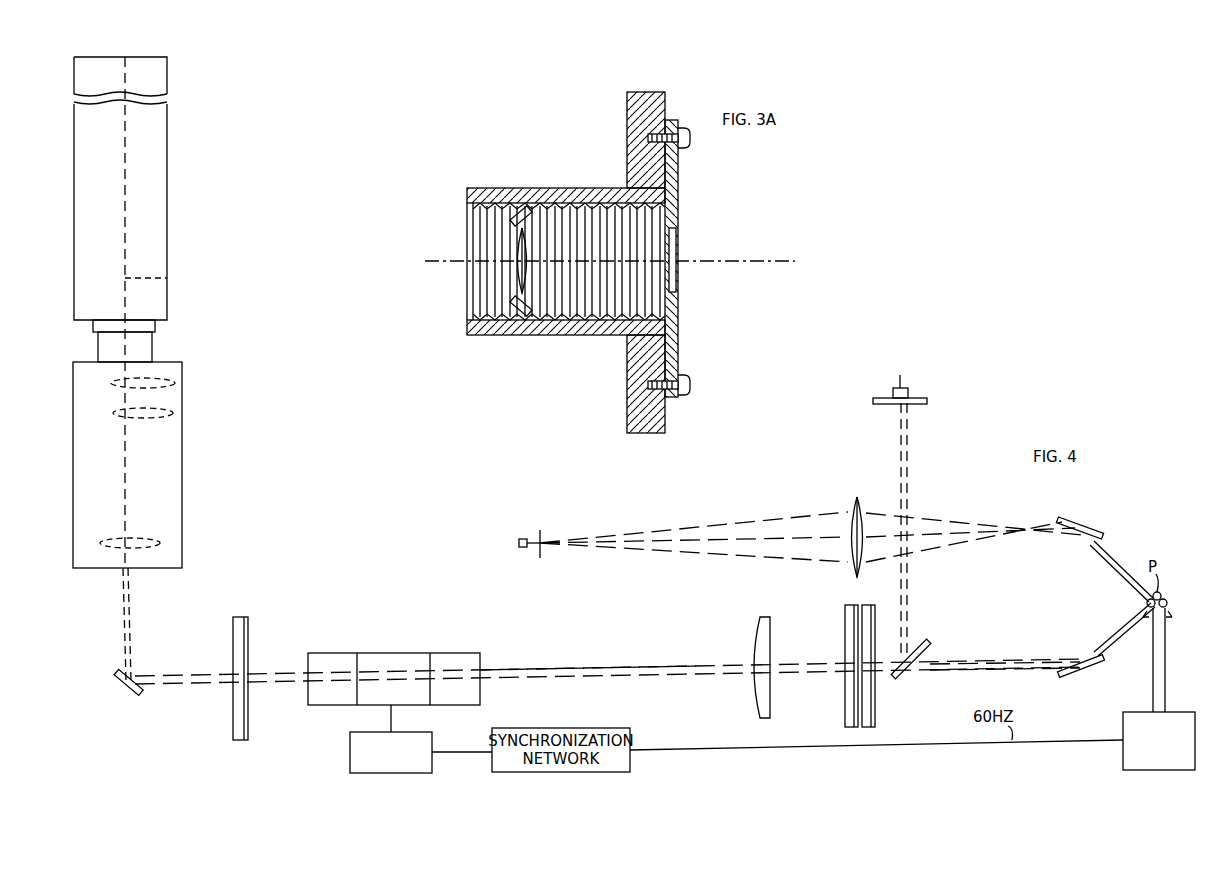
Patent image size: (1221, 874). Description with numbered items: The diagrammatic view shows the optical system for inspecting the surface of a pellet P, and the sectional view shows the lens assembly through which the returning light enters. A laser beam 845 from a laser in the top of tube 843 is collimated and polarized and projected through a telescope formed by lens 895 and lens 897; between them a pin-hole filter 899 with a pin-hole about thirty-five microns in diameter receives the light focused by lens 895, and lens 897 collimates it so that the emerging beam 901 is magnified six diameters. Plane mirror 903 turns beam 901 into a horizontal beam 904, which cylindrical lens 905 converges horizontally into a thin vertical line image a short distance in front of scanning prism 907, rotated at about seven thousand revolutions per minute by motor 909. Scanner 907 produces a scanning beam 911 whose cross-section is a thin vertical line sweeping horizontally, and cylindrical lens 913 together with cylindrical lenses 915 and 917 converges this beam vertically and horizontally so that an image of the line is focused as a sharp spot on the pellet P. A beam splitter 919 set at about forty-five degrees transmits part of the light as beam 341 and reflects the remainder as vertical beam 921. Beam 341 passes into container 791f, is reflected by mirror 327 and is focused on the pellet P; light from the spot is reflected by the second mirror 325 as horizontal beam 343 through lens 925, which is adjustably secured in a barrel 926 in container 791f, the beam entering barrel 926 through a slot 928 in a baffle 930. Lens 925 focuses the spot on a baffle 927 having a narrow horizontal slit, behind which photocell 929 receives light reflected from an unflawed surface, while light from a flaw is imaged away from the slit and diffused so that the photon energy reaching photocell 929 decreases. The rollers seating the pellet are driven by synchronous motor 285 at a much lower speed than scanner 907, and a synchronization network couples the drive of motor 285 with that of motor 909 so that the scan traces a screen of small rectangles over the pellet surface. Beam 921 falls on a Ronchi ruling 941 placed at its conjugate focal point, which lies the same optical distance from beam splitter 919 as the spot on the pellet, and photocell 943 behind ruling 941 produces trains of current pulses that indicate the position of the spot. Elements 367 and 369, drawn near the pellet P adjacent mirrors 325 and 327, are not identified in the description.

In FIG. 4, the tube 843 is at (167, 185).
In FIG. 4, the laser beam 845 is at (167, 280).
In FIG. 4, the lens 895 is at (175, 383).
In FIG. 4, the pin-hole filter 899 is at (173, 412).
In FIG. 4, the lens 897 is at (160, 541).
In FIG. 4, the beam 901 is at (133, 630).
In FIG. 4, the plane mirror 903 is at (122, 688).
In FIG. 4, the horizontal beam 904 is at (200, 686).
In FIG. 4, the cylindrical lens 905 is at (248, 640).
In FIG. 4, the scanning prism 907 is at (392, 653).
In FIG. 4, the motor 909 is at (350, 745).
In FIG. 4, the scanning beam 911 is at (537, 665).
In FIG. 4, the cylindrical lens 913 is at (757, 630).
In FIG. 4, the cylindrical lens 915 is at (845, 712).
In FIG. 4, the cylindrical lens 917 is at (875, 712).
In FIG. 4, the beam splitter 919 is at (928, 650).
In FIG. 4, the vertical beam 921 is at (908, 578).
In FIG. 3A, the lens 925 is at (518, 270).
In FIG. 4, the lens 925 is at (850, 505).
In FIG. 3A, the barrel 926 is at (592, 188).
In FIG. 4, the baffle 927 is at (544, 530).
In FIG. 3A, the slot 928 is at (677, 276).
In FIG. 4, the photocell 929 is at (519, 543).
In FIG. 3A, the baffle 930 is at (678, 178).
In FIG. 3A, the container 791f is at (665, 412).
In FIG. 4, the Ronchi ruling 941 is at (920, 404).
In FIG. 4, the photocell 943 is at (908, 390).
In FIG. 4, the horizontal beam 343 is at (984, 530).
In FIG. 4, the beam 341 is at (978, 662).
In FIG. 4, the mirror 325 is at (1080, 521).
In FIG. 4, the mirror 327 is at (1078, 675).
In FIG. 4, the mirror support arm 367 is at (1140, 608).
In FIG. 4, the pivot 369 is at (1166, 600).
In FIG. 4, the synchronous motor 285 is at (1138, 712).